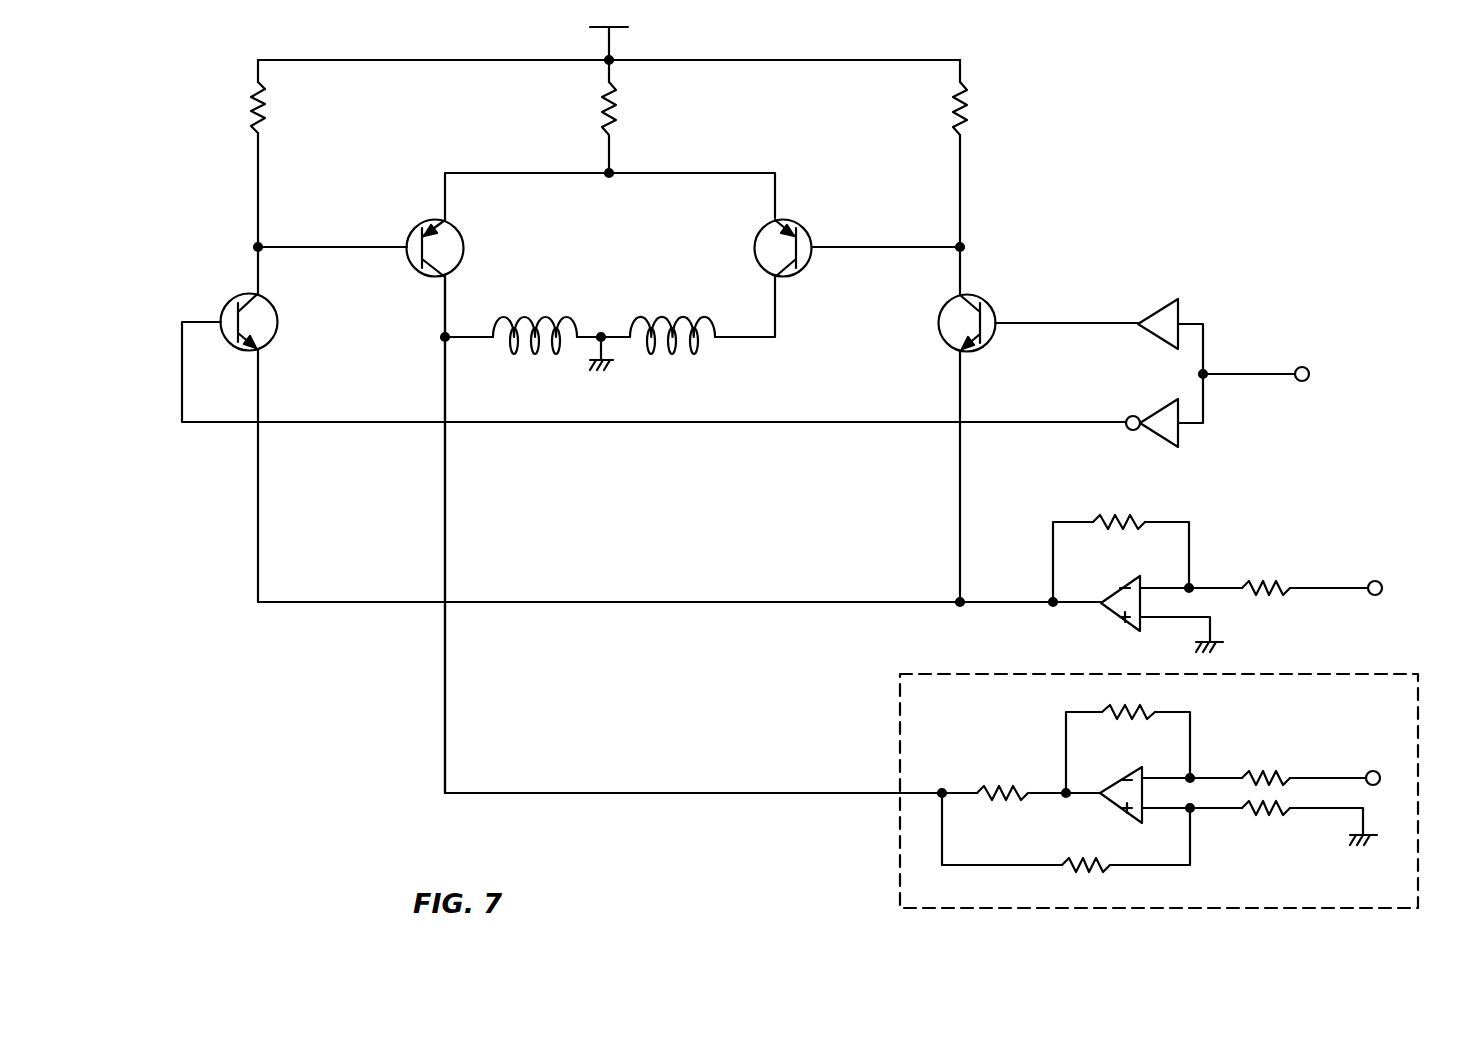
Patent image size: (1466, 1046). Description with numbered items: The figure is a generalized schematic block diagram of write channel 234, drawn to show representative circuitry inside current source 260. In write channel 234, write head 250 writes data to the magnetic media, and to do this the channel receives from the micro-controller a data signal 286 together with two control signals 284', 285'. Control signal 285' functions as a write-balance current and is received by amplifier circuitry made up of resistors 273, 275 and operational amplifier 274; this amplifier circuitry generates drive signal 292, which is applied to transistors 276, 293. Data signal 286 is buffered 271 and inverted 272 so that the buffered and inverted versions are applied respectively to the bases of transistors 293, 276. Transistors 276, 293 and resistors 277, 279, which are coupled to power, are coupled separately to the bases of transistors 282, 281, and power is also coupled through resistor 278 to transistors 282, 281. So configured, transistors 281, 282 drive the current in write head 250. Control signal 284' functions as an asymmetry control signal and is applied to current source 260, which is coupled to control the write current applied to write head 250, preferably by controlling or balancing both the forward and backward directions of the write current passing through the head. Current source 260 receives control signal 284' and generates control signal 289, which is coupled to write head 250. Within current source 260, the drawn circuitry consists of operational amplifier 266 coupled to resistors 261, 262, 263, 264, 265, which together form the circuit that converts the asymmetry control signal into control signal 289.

The write channel 234 is at (1228, 60).
The resistor 277 is at (266, 112).
The resistor 278 is at (614, 90).
The resistor 279 is at (966, 118).
The transistor 282 is at (466, 240).
The transistor 281 is at (754, 244).
The transistor 293 is at (938, 296).
The transistor 276 is at (278, 336).
The write head 250 is at (608, 363).
The buffer 271 is at (1150, 314).
The inverter 272 is at (1145, 414).
The data signal 286 is at (1308, 368).
The control signal 289 is at (442, 453).
The drive signal 292 is at (632, 604).
The resistor 275 is at (1139, 521).
The resistor 273 is at (1251, 578).
The control signal 285' is at (1417, 571).
The operational amplifier 274 is at (1112, 618).
The current source 260 is at (898, 848).
The resistor 261 is at (1000, 790).
The resistor 262 is at (1068, 870).
The resistor 263 is at (1148, 708).
The resistor 264 is at (1280, 777).
The resistor 265 is at (1288, 814).
The operational amplifier 266 is at (1122, 810).
The control signal 284' is at (1345, 751).